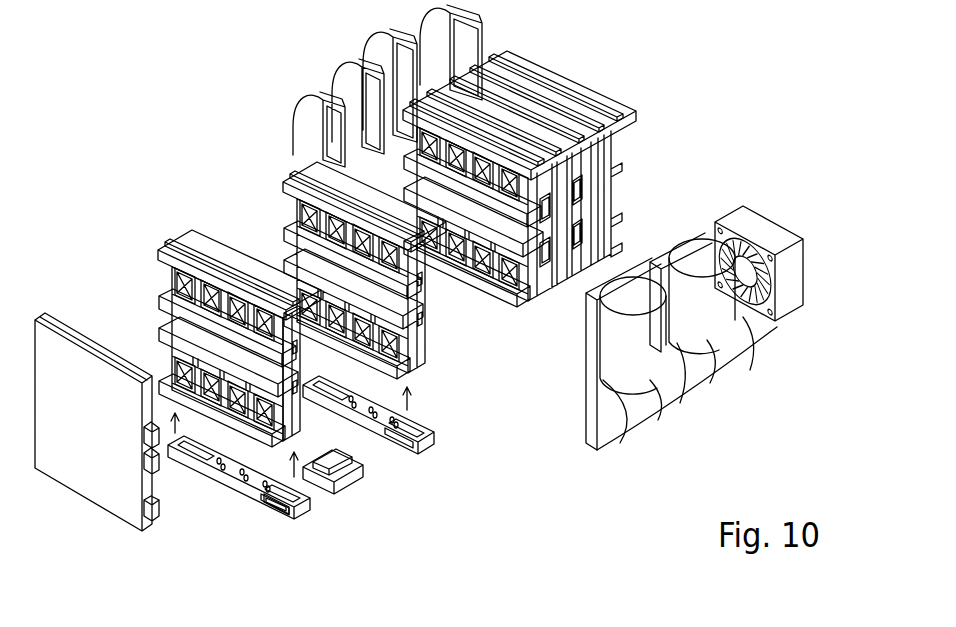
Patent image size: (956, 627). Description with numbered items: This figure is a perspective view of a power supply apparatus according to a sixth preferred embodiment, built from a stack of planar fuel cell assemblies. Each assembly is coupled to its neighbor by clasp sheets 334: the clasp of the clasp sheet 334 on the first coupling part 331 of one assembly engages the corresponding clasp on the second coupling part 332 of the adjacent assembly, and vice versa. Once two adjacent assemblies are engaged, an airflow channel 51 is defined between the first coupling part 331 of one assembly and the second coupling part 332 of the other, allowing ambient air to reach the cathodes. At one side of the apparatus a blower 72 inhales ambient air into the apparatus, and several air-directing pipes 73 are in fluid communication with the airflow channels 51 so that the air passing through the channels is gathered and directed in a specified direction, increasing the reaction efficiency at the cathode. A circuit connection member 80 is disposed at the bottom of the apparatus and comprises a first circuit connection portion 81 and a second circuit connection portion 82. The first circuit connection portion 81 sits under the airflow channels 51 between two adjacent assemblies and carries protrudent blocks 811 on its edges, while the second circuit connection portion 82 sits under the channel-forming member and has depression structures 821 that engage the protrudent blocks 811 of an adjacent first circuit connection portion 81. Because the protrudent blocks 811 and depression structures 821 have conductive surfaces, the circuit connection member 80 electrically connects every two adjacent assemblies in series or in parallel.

The airflow channel 51 is at (328, 241).
The first coupling part 331 is at (295, 187).
The second coupling part 332 is at (313, 160).
The clasp sheet 334 is at (335, 220).
The blower 72 is at (762, 228).
The air-directing pipe 73 is at (770, 342).
The circuit connection member 80 is at (306, 471).
The first circuit connection portion 81 is at (374, 471).
The protrudent block 811 is at (379, 462).
The second circuit connection portion 82 is at (243, 501).
The depression structure 821 is at (263, 503).